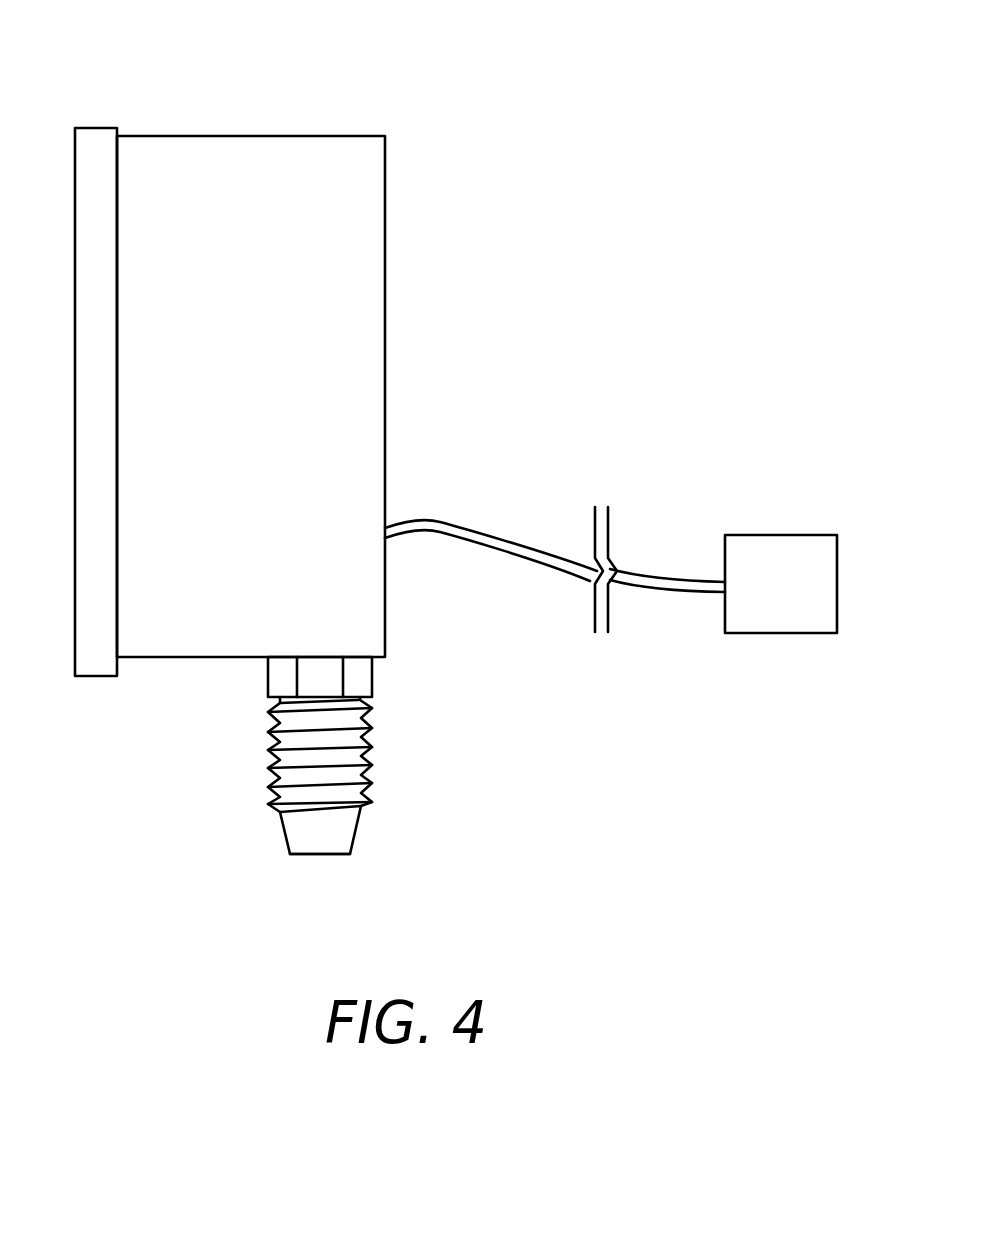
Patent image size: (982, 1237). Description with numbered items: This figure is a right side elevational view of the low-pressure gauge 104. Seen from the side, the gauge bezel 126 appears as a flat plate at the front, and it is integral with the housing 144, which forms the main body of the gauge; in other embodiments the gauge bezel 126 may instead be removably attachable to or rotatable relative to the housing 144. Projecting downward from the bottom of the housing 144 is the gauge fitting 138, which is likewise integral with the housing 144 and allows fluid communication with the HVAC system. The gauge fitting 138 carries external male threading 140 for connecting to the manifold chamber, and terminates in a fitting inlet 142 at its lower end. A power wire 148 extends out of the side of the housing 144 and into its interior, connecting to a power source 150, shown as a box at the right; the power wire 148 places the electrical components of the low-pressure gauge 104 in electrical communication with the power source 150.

The low-pressure gauge 104 is at (504, 101).
The gauge bezel 126 is at (97, 128).
The housing 144 is at (375, 258).
The power wire 148 is at (436, 521).
The power source 150 is at (816, 612).
The external male threading 140 is at (356, 731).
The gauge fitting 138 is at (360, 808).
The fitting inlet 142 is at (333, 855).